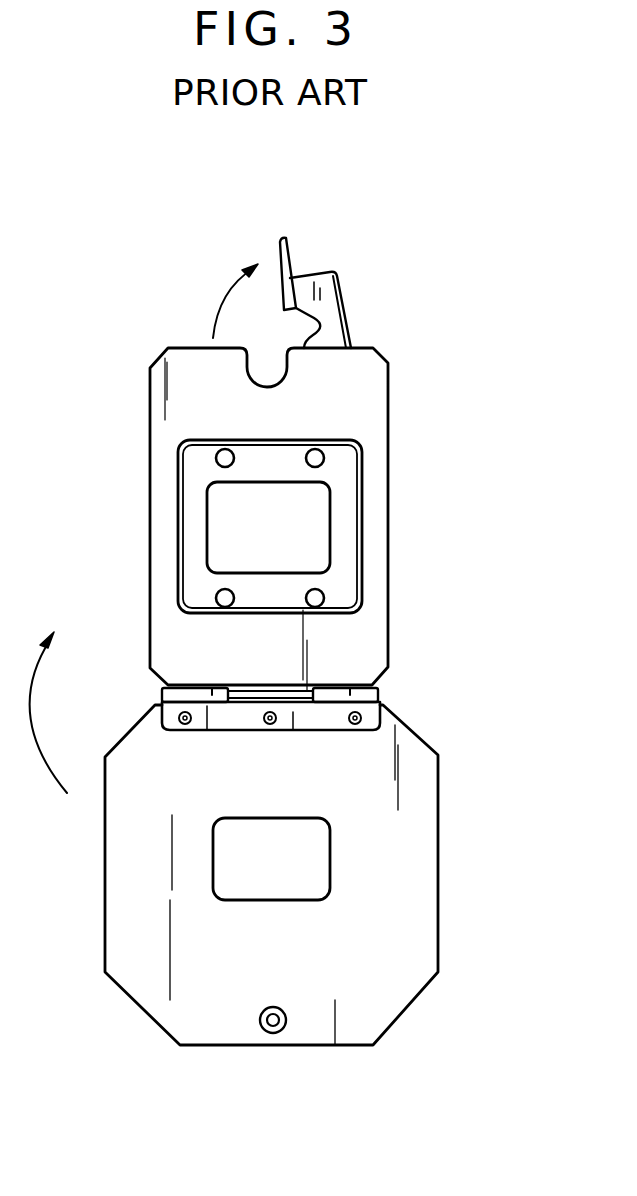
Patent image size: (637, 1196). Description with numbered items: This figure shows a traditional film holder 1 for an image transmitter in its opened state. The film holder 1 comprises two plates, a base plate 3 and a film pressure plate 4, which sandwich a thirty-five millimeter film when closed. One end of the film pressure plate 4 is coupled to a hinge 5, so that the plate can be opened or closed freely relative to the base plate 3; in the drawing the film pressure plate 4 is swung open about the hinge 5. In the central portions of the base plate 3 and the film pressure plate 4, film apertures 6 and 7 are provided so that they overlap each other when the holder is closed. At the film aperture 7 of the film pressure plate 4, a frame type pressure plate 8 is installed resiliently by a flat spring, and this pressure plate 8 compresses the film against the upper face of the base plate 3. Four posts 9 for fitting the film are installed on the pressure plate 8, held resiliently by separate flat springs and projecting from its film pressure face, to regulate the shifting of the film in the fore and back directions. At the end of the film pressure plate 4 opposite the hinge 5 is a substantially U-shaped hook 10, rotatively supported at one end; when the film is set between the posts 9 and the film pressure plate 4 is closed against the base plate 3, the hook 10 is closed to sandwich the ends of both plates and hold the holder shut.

The film holder 1 is at (88, 478).
The base plate 3 is at (418, 823).
The film pressure plate 4 is at (376, 390).
The hinge 5 is at (378, 699).
The film aperture 6 is at (323, 879).
The film aperture 7 is at (213, 537).
The frame type pressure plate 8 is at (360, 515).
The posts 9 is at (323, 455).
The hook 10 is at (340, 283).